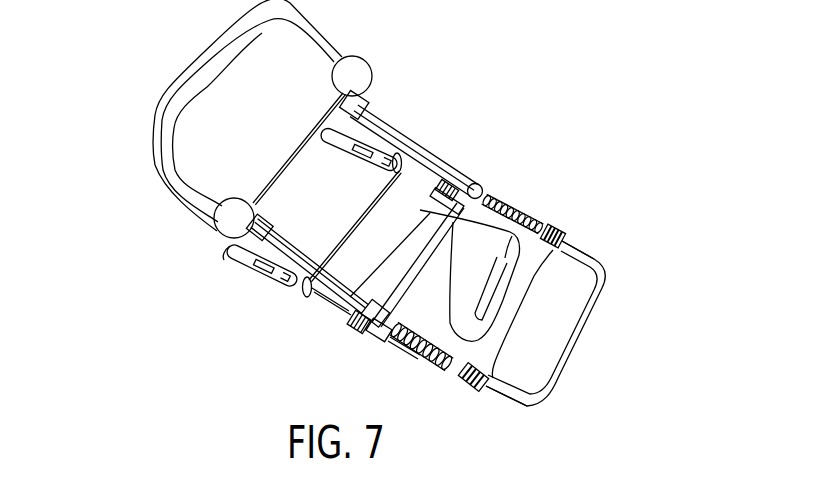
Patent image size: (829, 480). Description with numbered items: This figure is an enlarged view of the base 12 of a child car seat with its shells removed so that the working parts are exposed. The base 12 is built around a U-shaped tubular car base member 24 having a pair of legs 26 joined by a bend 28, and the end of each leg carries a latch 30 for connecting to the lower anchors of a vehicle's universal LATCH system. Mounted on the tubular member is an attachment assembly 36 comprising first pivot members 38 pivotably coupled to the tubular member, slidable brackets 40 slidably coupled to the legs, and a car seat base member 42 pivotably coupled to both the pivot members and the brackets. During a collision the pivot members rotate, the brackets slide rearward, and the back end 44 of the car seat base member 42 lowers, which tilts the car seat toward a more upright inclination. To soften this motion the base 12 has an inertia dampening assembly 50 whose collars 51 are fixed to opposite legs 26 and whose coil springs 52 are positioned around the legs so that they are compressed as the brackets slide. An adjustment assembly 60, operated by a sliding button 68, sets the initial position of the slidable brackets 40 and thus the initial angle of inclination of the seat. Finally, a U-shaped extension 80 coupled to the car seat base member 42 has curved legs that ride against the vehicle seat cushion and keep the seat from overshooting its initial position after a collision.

The base 12 is at (575, 203).
The U-shaped tubular car base member 24 is at (624, 252).
The legs 26 is at (588, 257).
The bend 28 is at (578, 336).
The latch 30 is at (337, 131).
The attachment assembly 36 is at (228, 253).
The first pivot members 38 is at (398, 172).
The slidable brackets 40 is at (358, 345).
The car seat base member 42 is at (420, 152).
The back end 44 is at (380, 120).
The inertia dampening assembly 50 is at (520, 200).
The collars 51 is at (545, 228).
The coil springs 52 is at (497, 195).
The adjustment assembly 60 is at (534, 300).
The button 68 is at (462, 328).
The extension 80 is at (127, 135).